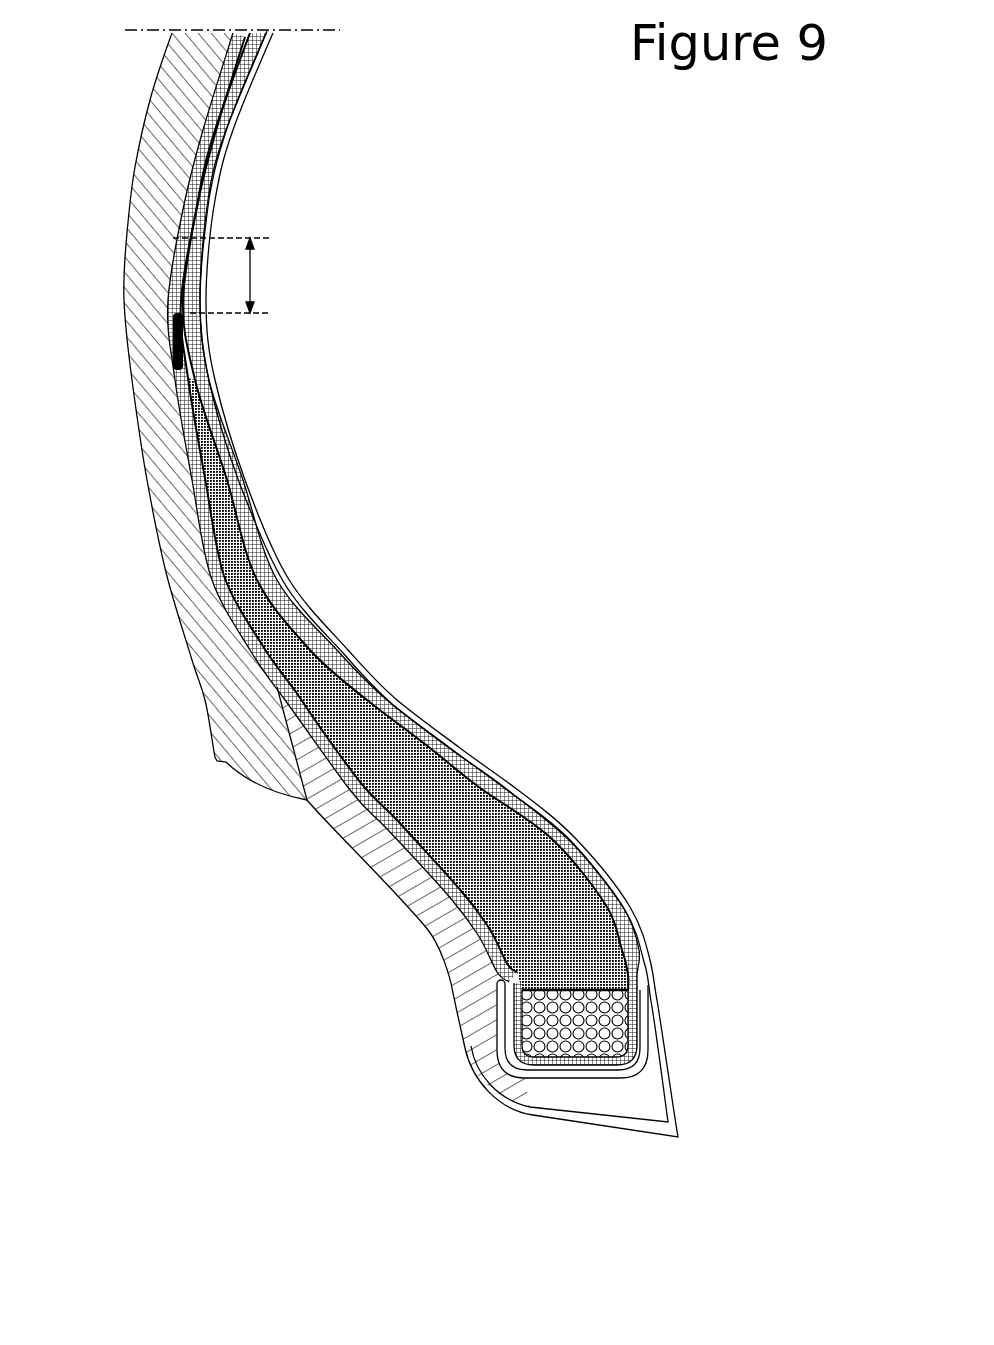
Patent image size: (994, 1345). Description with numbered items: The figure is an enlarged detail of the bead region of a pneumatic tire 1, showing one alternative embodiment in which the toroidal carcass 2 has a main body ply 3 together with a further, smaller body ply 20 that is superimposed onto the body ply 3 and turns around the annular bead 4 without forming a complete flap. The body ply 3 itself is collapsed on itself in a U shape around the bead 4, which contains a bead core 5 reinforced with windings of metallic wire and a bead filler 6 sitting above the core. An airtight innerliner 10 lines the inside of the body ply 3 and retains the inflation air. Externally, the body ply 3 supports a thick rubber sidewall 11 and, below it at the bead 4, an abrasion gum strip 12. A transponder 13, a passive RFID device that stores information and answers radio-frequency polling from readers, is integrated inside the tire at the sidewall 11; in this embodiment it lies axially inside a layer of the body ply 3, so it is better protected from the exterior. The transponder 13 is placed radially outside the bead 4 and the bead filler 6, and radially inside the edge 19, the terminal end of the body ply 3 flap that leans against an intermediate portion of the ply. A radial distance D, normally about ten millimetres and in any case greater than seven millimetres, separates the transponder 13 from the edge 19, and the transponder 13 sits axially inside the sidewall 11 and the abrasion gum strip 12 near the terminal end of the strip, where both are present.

The pneumatic tire 1 is at (187, 1070).
The toroidal carcass 2 is at (575, 410).
The body ply 3 is at (253, 57).
The annular bead 4 is at (723, 846).
The bead core 5 is at (590, 1030).
The bead filler 6 is at (477, 832).
The innerliner 10 is at (225, 438).
The sidewall 11 is at (152, 286).
The abrasion gum strip 12 is at (240, 725).
The transponder 13 is at (165, 347).
The edge of the body ply 19 is at (150, 192).
The additional body ply 20 is at (233, 103).